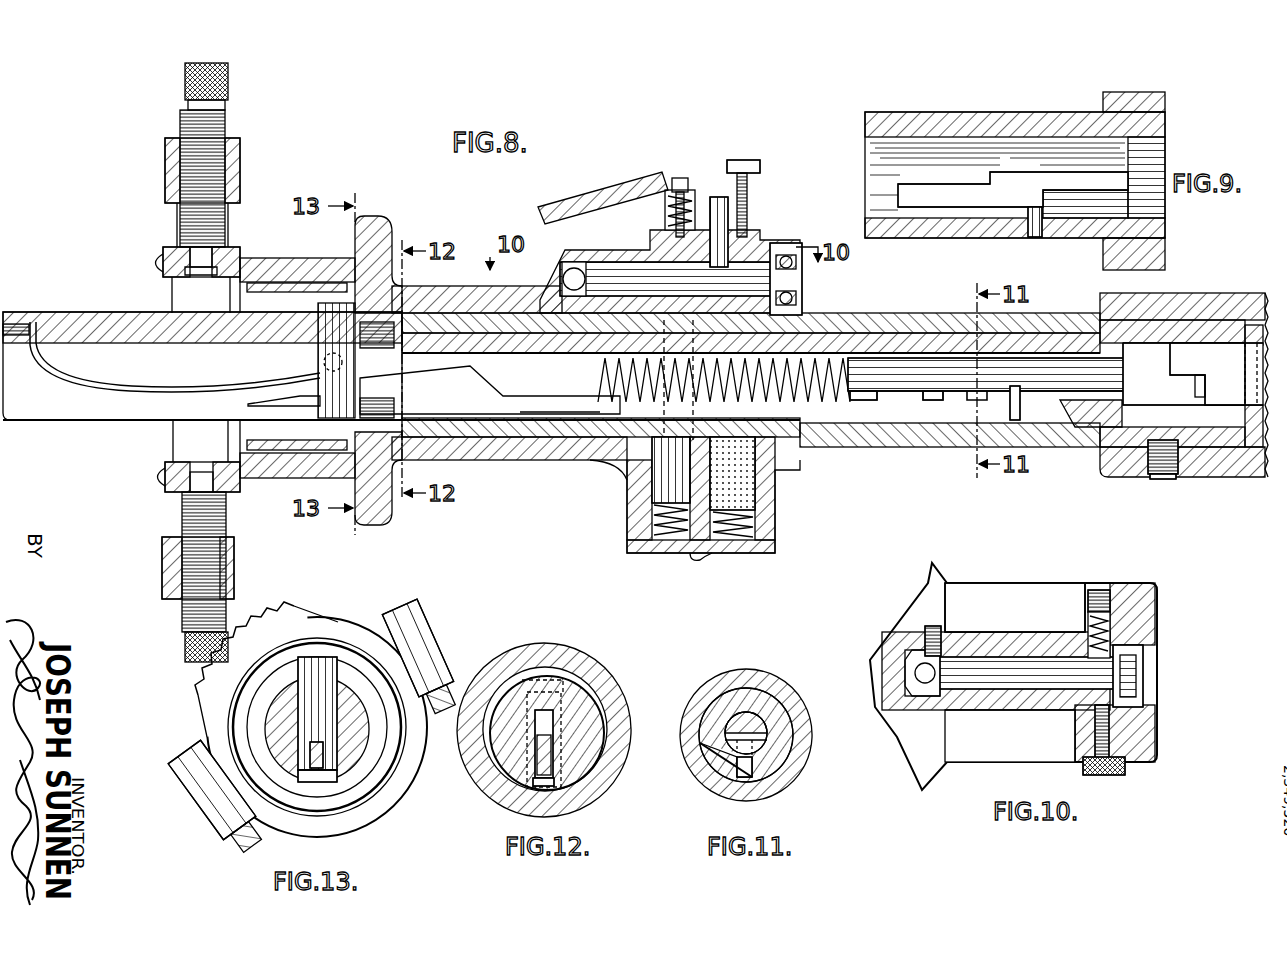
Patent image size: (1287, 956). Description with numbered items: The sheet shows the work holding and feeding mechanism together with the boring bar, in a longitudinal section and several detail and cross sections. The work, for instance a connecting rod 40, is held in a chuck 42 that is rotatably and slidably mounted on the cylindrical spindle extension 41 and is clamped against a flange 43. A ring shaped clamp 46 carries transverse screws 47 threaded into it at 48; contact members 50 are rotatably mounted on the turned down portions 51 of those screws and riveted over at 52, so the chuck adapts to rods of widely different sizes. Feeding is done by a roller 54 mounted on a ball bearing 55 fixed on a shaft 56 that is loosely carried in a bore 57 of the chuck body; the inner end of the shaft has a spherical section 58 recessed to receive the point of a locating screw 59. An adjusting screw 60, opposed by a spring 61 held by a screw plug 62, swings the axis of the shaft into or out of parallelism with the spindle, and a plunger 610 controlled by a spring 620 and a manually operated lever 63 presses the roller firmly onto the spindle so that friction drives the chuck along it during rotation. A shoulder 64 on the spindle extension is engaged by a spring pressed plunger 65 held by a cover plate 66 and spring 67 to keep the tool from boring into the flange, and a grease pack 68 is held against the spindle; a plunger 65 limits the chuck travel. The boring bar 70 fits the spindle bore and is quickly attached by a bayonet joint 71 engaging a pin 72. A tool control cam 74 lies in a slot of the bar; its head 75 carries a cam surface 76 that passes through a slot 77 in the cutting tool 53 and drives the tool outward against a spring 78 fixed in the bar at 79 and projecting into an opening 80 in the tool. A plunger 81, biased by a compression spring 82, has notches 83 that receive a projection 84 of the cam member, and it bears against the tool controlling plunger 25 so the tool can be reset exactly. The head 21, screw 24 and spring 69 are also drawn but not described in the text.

In FIG. 8, the head 21 is at (1114, 298).
In FIG. 9, the head 21 is at (1103, 100).
In FIG. 8, the screw 24 is at (1246, 445).
In FIG. 8, the tool controlling plunger 25 is at (1196, 348).
In FIG. 8, the connecting rod 40 is at (302, 258).
In FIG. 13, the connecting rod 40 is at (346, 630).
In FIG. 8, the spindle extension 41 is at (958, 449).
In FIG. 11, the spindle extension 41 is at (805, 672).
In FIG. 8, the chuck 42 is at (556, 468).
In FIG. 10, the chuck 42 is at (996, 716).
In FIG. 12, the chuck 42 is at (565, 648).
In FIG. 8, the flange 43 is at (370, 218).
In FIG. 8, the clamp 46 is at (168, 520).
In FIG. 8, the transverse screw 47 is at (180, 640).
In FIG. 8, the screw thread 48 is at (226, 566).
In FIG. 8, the contact member 50 is at (170, 488).
In FIG. 8, the turned down portion 51 is at (218, 482).
In FIG. 8, the riveted portion 52 is at (190, 462).
In FIG. 8, the cutting tool 53 is at (332, 300).
In FIG. 13, the cutting tool 53 is at (340, 652).
In FIG. 8, the roller 54 is at (803, 249).
In FIG. 10, the roller 54 is at (1143, 666).
In FIG. 8, the ball bearing 55 is at (803, 305).
In FIG. 8, the shaft 56 is at (641, 268).
In FIG. 10, the shaft 56 is at (1031, 688).
In FIG. 8, the bore 57 is at (577, 238).
In FIG. 10, the bore 57 is at (1032, 652).
In FIG. 8, the spherical section 58 is at (562, 280).
In FIG. 10, the spherical section 58 is at (926, 682).
In FIG. 10, the locating screw 59 is at (936, 630).
In FIG. 10, the adjusting screw 60 is at (1125, 770).
In FIG. 10, the spring 61 is at (1106, 626).
In FIG. 10, the screw plug 62 is at (1096, 593).
In FIG. 8, the lever 63 is at (613, 191).
In FIG. 8, the shoulder 64 is at (626, 460).
In FIG. 8, the spring pressed plunger 65 is at (656, 493).
In FIG. 8, the cover plate 66 is at (661, 556).
In FIG. 8, the spring 67 is at (656, 536).
In FIG. 8, the grease pack 68 is at (760, 488).
In FIG. 8, the spring 69 is at (760, 521).
In FIG. 8, the boring bar 70 is at (97, 313).
In FIG. 9, the boring bar 70 is at (918, 140).
In FIG. 11, the boring bar 70 is at (780, 718).
In FIG. 12, the boring bar 70 is at (585, 713).
In FIG. 13, the boring bar 70 is at (272, 722).
In FIG. 9, the bayonet joint construction 71 is at (1013, 189).
In FIG. 9, the pin 72 is at (1032, 220).
In FIG. 8, the tool control cam 74 is at (522, 412).
In FIG. 11, the tool control cam 74 is at (752, 772).
In FIG. 8, the head 75 is at (490, 390).
In FIG. 12, the head 75 is at (556, 762).
In FIG. 13, the head 75 is at (318, 781).
In FIG. 8, the cam surface 76 is at (250, 404).
In FIG. 13, the slot 77 is at (325, 756).
In FIG. 8, the spring 78 is at (120, 392).
In FIG. 8, the spring mounting 79 is at (40, 294).
In FIG. 8, the opening 80 is at (325, 362).
In FIG. 8, the plunger 81 is at (1046, 400).
In FIG. 9, the plunger 81 is at (1150, 165).
In FIG. 11, the plunger 81 is at (762, 730).
In FIG. 8, the compression spring 82 is at (826, 405).
In FIG. 8, the notch 83 is at (868, 400).
In FIG. 11, the notch 83 is at (756, 748).
In FIG. 8, the projection 84 is at (935, 400).
In FIG. 8, the plunger 610 is at (738, 200).
In FIG. 8, the spring 620 is at (672, 178).